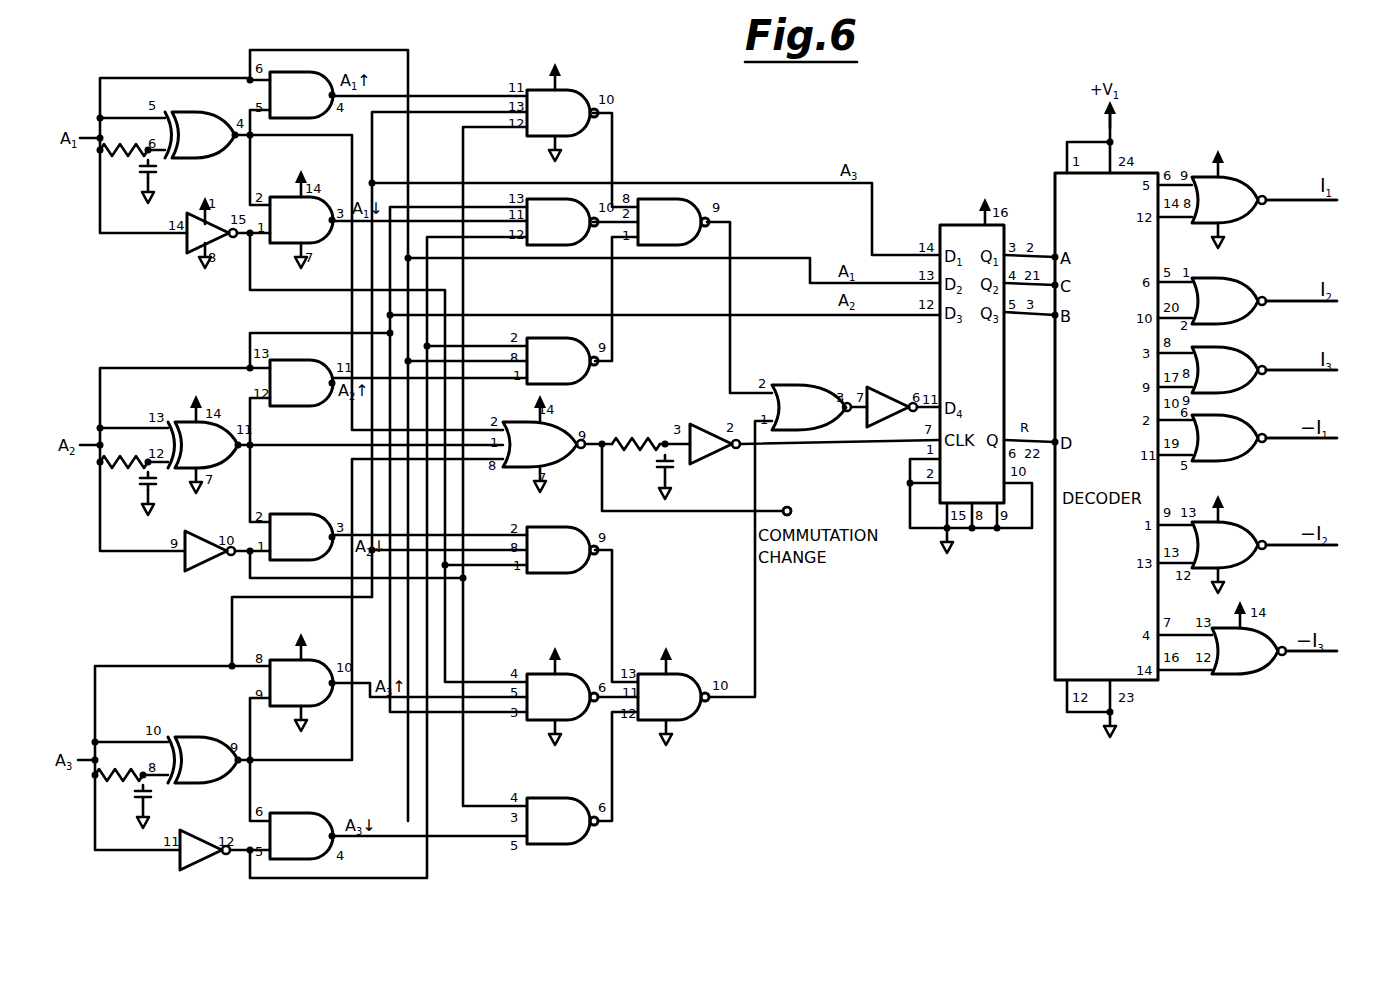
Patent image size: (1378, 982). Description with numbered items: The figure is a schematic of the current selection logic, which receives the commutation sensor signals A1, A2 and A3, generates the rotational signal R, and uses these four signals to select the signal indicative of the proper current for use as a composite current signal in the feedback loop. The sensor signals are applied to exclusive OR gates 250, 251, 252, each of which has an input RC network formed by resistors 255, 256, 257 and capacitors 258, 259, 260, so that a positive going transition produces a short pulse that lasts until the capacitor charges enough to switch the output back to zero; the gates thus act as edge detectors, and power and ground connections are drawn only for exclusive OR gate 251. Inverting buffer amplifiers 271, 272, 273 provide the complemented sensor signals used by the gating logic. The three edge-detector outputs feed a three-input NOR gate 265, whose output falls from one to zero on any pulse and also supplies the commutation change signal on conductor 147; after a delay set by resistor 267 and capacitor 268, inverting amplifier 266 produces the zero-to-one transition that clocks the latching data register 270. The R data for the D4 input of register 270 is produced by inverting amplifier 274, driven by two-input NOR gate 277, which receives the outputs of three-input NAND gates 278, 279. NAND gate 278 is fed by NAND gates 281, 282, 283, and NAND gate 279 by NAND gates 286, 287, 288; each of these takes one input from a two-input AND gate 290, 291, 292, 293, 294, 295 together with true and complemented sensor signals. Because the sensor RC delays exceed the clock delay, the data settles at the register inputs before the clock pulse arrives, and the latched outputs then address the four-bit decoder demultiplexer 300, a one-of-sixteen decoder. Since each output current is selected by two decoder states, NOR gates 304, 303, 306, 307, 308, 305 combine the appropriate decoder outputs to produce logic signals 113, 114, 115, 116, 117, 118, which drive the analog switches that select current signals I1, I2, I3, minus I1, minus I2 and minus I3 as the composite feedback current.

The logic signal 113 is at (1276, 201).
The logic signal 114 is at (1284, 302).
The logic signal 115 is at (1286, 371).
The logic signal 116 is at (1286, 439).
The logic signal 117 is at (1286, 546).
The logic signal 118 is at (1311, 670).
The conductor 147 is at (782, 500).
The exclusive OR gate 250 is at (202, 135).
The exclusive OR gate 251 is at (205, 436).
The exclusive OR gate 252 is at (205, 760).
The resistor 255 is at (118, 160).
The resistor 256 is at (118, 472).
The resistor 257 is at (114, 785).
The capacitor 258 is at (140, 168).
The capacitor 259 is at (140, 480).
The capacitor 260 is at (162, 798).
The three-input NOR gate 265 is at (542, 442).
The inverting amplifier 266 is at (718, 424).
The resistor 267 is at (636, 438).
The capacitor 268 is at (675, 468).
The latching data register 270 is at (980, 372).
The inverting buffer amplifier 271 is at (188, 243).
The inverting buffer amplifier 272 is at (186, 562).
The inverting buffer amplifier 273 is at (181, 868).
The inverting amplifier 274 is at (896, 390).
The two-input NOR gate 277 is at (811, 407).
The three-input NAND gate 278 is at (673, 222).
The three-input NAND gate 279 is at (673, 688).
The three-input NAND gate 281 is at (562, 104).
The three-input NAND gate 282 is at (562, 222).
The three-input NAND gate 283 is at (562, 361).
The three-input NAND gate 286 is at (562, 550).
The three-input NAND gate 287 is at (562, 688).
The three-input NAND gate 288 is at (562, 821).
The two-input AND gate 290 is at (303, 95).
The two-input AND gate 291 is at (303, 212).
The two-input AND gate 292 is at (303, 383).
The two-input AND gate 293 is at (303, 537).
The two-input AND gate 294 is at (303, 674).
The two-input AND gate 295 is at (303, 836).
The decoder demultiplexer 300 is at (1110, 419).
The NOR gate 303 is at (1229, 301).
The NOR gate 304 is at (1229, 191).
The NOR gate 305 is at (1249, 630).
The NOR gate 306 is at (1229, 370).
The NOR gate 307 is at (1229, 438).
The NOR gate 308 is at (1229, 536).